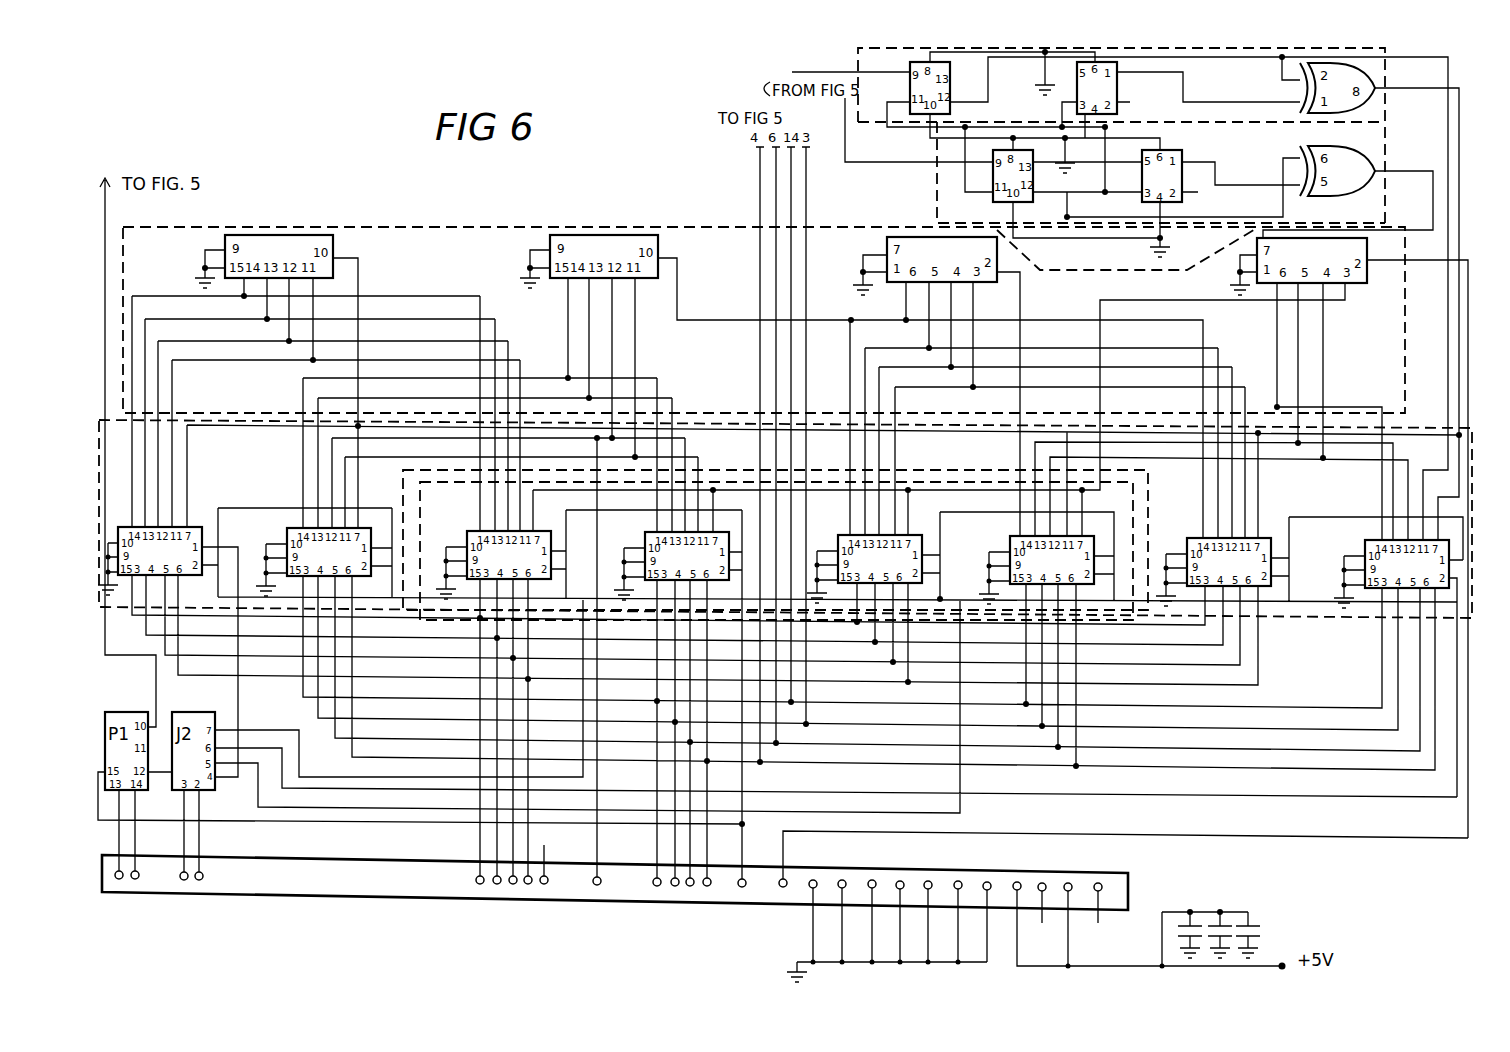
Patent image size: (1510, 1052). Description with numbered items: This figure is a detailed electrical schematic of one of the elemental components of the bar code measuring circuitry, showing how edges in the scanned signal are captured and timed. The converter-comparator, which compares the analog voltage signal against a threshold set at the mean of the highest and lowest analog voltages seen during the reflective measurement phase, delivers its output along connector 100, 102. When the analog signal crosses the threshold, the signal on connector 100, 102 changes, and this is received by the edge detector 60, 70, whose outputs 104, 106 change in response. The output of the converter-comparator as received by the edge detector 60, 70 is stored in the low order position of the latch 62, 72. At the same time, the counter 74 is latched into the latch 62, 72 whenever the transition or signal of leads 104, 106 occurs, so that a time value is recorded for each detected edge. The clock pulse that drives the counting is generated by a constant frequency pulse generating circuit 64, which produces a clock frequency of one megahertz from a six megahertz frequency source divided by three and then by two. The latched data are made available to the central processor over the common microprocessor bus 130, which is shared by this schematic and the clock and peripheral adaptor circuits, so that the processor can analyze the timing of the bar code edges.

The edge detector 60 is at (1394, 43).
The edge detector 70 is at (1385, 106).
The counter 74 is at (732, 228).
The latch 62 is at (1434, 424).
The latch 72 is at (438, 526).
The constant frequency pulse generating circuit 64 is at (1330, 812).
The common microprocessor bus 130 is at (345, 892).
The connector 100 is at (852, 70).
The connector 102 is at (866, 176).
The output lead 104 is at (1441, 79).
The output lead 106 is at (1431, 184).